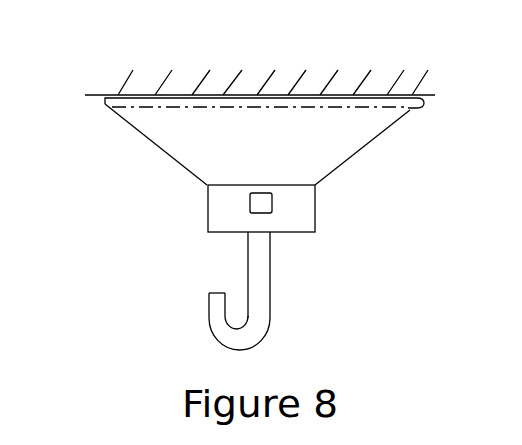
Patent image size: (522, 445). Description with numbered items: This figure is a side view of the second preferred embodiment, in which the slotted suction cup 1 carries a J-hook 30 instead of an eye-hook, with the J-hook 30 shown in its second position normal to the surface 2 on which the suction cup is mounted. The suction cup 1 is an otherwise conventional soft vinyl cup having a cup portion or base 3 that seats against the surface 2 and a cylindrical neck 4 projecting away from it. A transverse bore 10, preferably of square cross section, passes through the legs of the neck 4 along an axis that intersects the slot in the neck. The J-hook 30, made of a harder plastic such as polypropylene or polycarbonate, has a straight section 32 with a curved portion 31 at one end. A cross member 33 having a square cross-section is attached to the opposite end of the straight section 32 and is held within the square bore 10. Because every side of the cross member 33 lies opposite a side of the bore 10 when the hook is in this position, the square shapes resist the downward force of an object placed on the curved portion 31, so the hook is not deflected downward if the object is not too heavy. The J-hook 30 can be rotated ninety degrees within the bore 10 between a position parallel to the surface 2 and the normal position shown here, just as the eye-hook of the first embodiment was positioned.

The slotted suction cup 1 is at (116, 160).
The surface 2 is at (104, 100).
The cup portion or base 3 is at (208, 157).
The cylindrical neck 4 is at (222, 204).
The transverse bore 10 is at (252, 194).
The cross member 33 is at (262, 210).
The J-hook 30 is at (292, 311).
The straight section 32 is at (258, 272).
The curved portion 31 is at (222, 323).